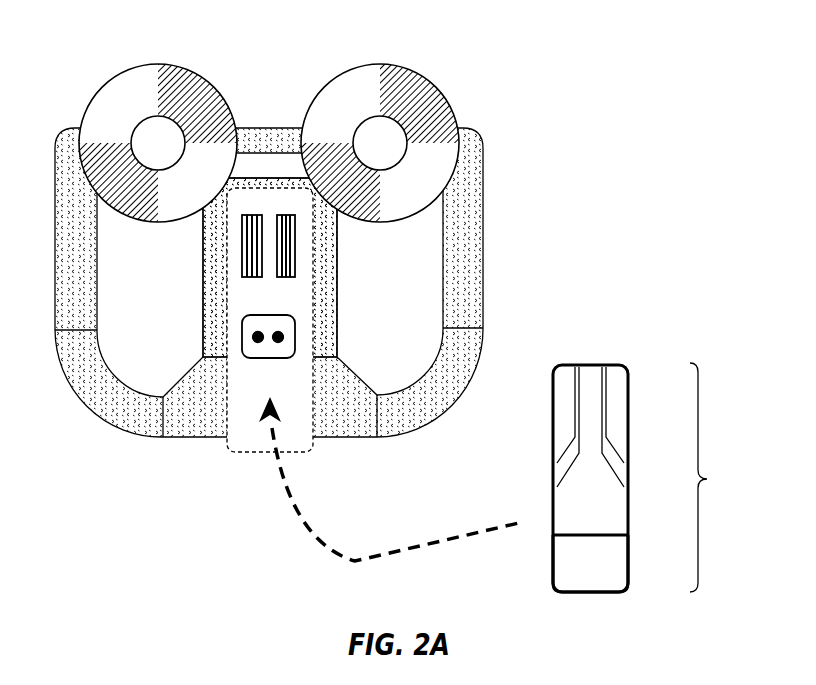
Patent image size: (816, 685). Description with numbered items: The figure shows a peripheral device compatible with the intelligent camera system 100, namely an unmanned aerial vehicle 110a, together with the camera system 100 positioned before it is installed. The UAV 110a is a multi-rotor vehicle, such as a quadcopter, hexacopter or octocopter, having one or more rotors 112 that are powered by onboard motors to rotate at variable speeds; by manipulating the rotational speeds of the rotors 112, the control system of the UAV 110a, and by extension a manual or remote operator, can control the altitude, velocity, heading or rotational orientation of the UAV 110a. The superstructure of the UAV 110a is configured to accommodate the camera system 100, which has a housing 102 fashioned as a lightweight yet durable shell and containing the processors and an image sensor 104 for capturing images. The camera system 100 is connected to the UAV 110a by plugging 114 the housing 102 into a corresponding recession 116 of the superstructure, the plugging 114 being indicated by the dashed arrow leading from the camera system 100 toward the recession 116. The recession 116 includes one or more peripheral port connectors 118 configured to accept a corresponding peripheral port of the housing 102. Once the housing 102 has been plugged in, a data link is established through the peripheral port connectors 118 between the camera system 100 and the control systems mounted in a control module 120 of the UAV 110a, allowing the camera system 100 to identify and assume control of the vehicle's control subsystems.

The unmanned aerial vehicle 110a is at (573, 112).
The rotors 112 is at (220, 108).
The plugging 114 is at (387, 558).
The recession 116 is at (235, 453).
The peripheral port connectors 118 is at (240, 245).
The control module 120 is at (333, 293).
The intelligent camera system 100 is at (654, 481).
The housing 102 is at (585, 364).
The image sensor 104 is at (590, 594).